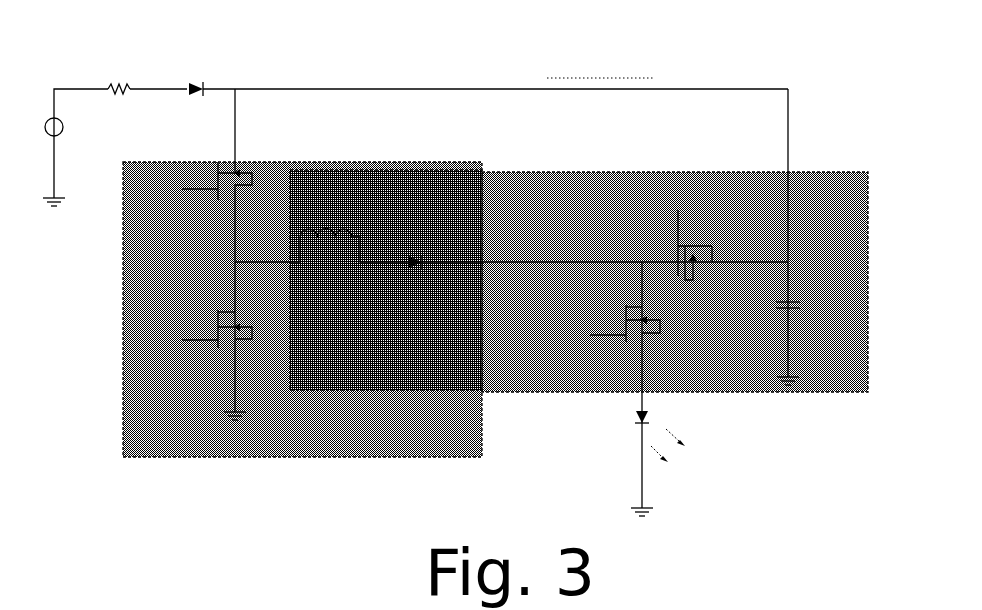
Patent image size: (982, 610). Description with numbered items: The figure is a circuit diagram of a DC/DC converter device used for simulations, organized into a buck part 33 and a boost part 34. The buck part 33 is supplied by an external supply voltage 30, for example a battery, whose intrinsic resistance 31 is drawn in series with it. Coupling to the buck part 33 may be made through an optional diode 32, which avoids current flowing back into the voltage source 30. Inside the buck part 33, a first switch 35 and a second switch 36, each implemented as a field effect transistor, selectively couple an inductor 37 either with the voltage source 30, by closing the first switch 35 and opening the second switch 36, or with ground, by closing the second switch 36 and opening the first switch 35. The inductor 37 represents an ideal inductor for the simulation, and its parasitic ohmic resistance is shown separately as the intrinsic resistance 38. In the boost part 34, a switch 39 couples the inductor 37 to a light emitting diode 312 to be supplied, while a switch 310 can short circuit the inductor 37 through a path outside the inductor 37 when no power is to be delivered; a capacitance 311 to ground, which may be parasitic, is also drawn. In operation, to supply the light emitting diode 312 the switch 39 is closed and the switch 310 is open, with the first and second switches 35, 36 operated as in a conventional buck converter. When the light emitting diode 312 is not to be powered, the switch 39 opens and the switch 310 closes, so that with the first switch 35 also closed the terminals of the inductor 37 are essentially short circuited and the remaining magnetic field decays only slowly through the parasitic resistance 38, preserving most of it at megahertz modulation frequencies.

The external supply voltage 30 is at (68, 124).
The intrinsic resistance 31 is at (136, 88).
The diode 32 is at (192, 80).
The buck part 33 is at (274, 162).
The boost part 34 is at (548, 172).
The first switch 35 is at (218, 190).
The second switch 36 is at (218, 311).
The inductor 37 is at (353, 234).
The intrinsic resistance 38 is at (414, 268).
The switch 39 is at (626, 318).
The switch 310 is at (712, 246).
The capacitance 311 is at (790, 300).
The light emitting diode 312 is at (634, 417).